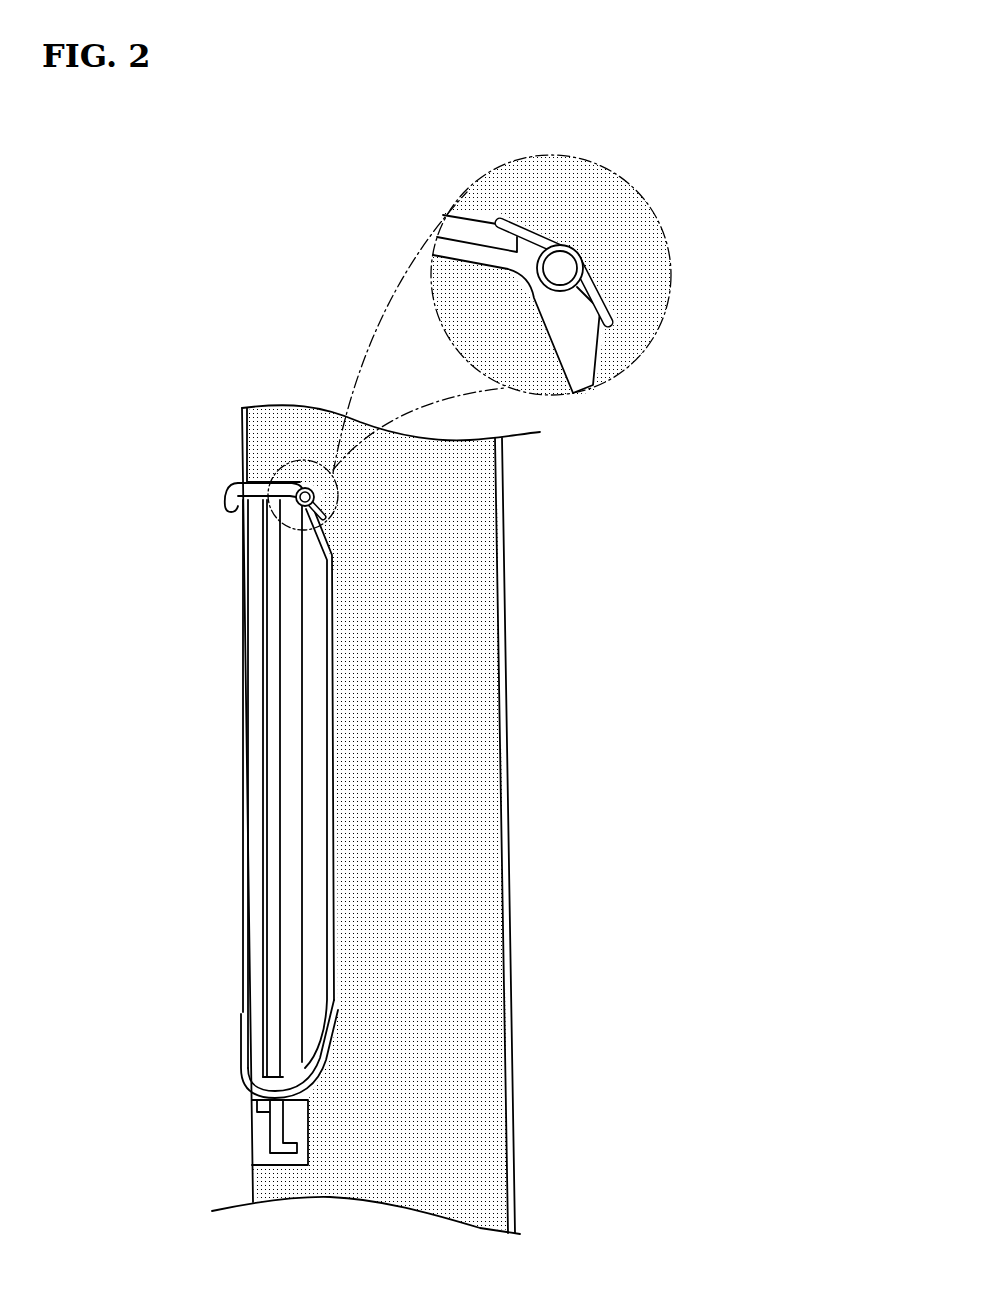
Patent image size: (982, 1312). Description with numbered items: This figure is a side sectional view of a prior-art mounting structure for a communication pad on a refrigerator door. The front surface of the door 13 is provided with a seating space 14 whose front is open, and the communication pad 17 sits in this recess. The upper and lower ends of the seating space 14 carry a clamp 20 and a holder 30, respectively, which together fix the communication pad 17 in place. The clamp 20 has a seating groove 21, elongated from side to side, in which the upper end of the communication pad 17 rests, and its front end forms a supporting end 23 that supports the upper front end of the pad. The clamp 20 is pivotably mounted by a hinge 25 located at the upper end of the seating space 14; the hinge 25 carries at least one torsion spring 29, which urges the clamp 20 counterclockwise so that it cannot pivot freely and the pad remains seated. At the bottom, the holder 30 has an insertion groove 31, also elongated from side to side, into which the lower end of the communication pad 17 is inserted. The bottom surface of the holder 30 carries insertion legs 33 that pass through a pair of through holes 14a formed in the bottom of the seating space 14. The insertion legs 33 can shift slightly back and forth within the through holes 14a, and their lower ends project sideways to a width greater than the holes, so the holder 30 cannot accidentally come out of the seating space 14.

The door 13 is at (228, 434).
The seating space 14 is at (329, 704).
The through holes 14a is at (268, 1103).
The communication pad 17 is at (245, 872).
The clamp 20 is at (224, 484).
The seating groove 21 is at (242, 543).
The supporting end 23 is at (225, 511).
The hinge 25 is at (565, 262).
The torsion spring 29 is at (603, 312).
The holder 30 is at (220, 1088).
The insertion groove 31 is at (268, 1063).
The insertion legs 33 is at (284, 1150).